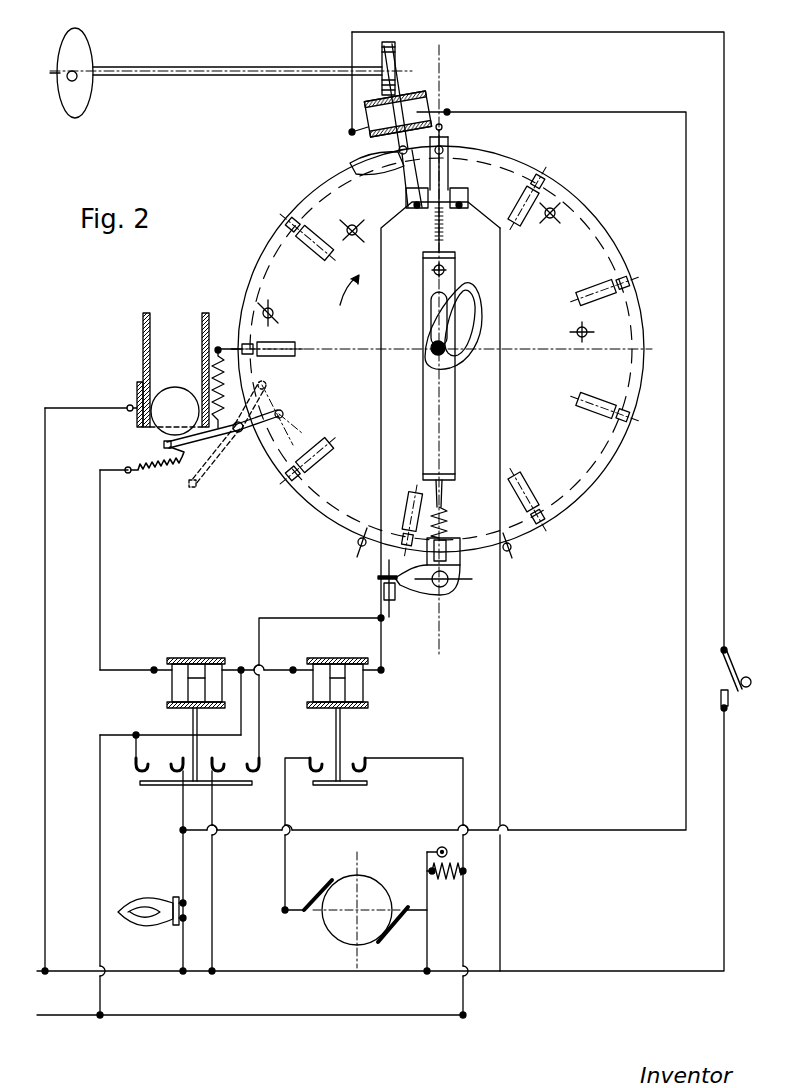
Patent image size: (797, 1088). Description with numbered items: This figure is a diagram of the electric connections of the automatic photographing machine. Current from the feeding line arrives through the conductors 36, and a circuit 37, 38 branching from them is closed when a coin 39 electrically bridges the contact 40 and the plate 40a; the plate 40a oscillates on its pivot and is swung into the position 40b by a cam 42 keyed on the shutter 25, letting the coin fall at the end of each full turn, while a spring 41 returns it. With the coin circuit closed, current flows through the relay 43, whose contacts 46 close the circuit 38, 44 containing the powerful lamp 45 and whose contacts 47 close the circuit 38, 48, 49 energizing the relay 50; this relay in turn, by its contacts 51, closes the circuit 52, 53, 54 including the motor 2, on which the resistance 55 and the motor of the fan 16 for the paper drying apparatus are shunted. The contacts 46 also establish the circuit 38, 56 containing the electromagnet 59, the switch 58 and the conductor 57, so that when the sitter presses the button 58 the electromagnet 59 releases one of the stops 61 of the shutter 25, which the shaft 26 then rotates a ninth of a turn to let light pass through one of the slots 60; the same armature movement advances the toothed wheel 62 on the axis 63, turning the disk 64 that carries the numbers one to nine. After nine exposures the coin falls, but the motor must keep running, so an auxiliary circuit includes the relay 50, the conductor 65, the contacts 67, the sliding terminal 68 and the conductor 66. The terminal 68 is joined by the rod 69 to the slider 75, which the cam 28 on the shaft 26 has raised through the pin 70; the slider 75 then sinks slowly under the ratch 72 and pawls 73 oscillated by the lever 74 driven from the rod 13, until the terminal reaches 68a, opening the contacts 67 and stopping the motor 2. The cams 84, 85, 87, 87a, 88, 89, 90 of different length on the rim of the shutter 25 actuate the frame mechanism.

The motor 2 is at (342, 925).
The rod 13 is at (395, 598).
The fan 16 is at (447, 852).
The shutter 25 is at (560, 500).
The shaft 26 is at (432, 353).
The cam 28 is at (460, 370).
The conductors 36 is at (70, 978).
The circuit conductor 37 is at (45, 697).
The circuit conductor 38 is at (100, 573).
The coin 39 is at (175, 406).
The contact 40 is at (137, 416).
The plate 40a is at (165, 446).
The displaced plate position 40b is at (197, 484).
The spring 41 is at (215, 376).
The cam 42 is at (283, 413).
The relay 43 is at (172, 690).
The circuit conductor 44 is at (183, 866).
The lamp 45 is at (148, 921).
The contacts 46 is at (159, 753).
The contacts 47 is at (235, 756).
The circuit conductor 48 is at (212, 853).
The circuit conductor 49 is at (259, 636).
The relay 50 is at (318, 688).
The contacts 51 is at (318, 764).
The circuit conductor 52 is at (427, 956).
The circuit conductor 53 is at (285, 866).
The circuit conductor 54 is at (463, 794).
The resistance 55 is at (468, 873).
The circuit conductor 56 is at (560, 830).
The conductor 57 is at (727, 777).
The switch 58 is at (736, 673).
The electromagnet 59 is at (418, 108).
The radial slots 60 is at (297, 349).
The projections 61 is at (385, 153).
The toothed wheel 62 is at (397, 48).
The axis 63 is at (205, 76).
The disk 64 is at (77, 118).
The conductor 65 is at (383, 455).
The conductor 66 is at (502, 455).
The contacts 67 is at (446, 176).
The sliding terminal 68 is at (450, 147).
The lowered terminal position 68a is at (434, 211).
The rod 69 is at (443, 236).
The pin 70 is at (446, 270).
The ratch 72 is at (448, 519).
The pawls 73 is at (455, 574).
The lever 74 is at (377, 579).
The slider 75 is at (447, 451).
The cam 84 is at (341, 222).
The cam 85 is at (275, 313).
The cam 87 is at (357, 542).
The cam 87a is at (512, 548).
The cam 88 is at (575, 332).
The cam 89 is at (556, 212).
The cam 90 is at (442, 125).